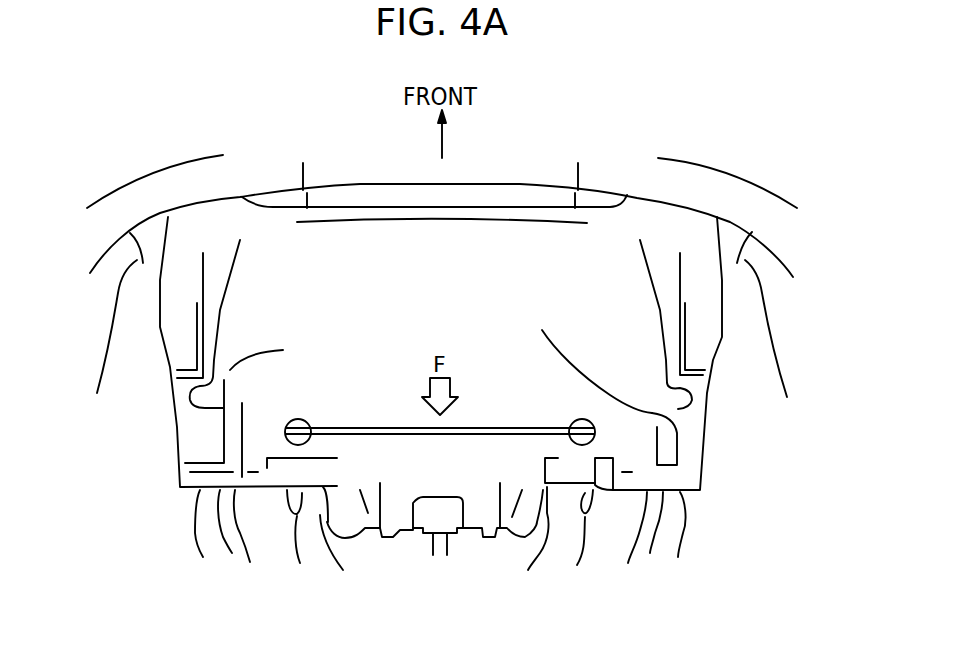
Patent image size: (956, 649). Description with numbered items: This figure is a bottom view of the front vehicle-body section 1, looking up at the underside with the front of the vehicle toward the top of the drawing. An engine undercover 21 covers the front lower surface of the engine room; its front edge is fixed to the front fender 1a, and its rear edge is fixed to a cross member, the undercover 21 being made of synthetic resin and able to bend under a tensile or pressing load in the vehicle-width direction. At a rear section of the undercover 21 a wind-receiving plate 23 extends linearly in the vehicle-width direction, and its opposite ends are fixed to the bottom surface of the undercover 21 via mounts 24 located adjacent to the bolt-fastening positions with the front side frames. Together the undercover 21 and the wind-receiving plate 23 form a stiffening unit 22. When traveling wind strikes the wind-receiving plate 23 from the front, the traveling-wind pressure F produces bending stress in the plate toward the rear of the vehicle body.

The front vehicle-body section 1 is at (687, 139).
The front fender 1a is at (160, 185).
The engine undercover 21 is at (622, 243).
The stiffening unit 22 is at (370, 459).
The wind-receiving plate 23 is at (472, 437).
The mount 24 is at (300, 420).